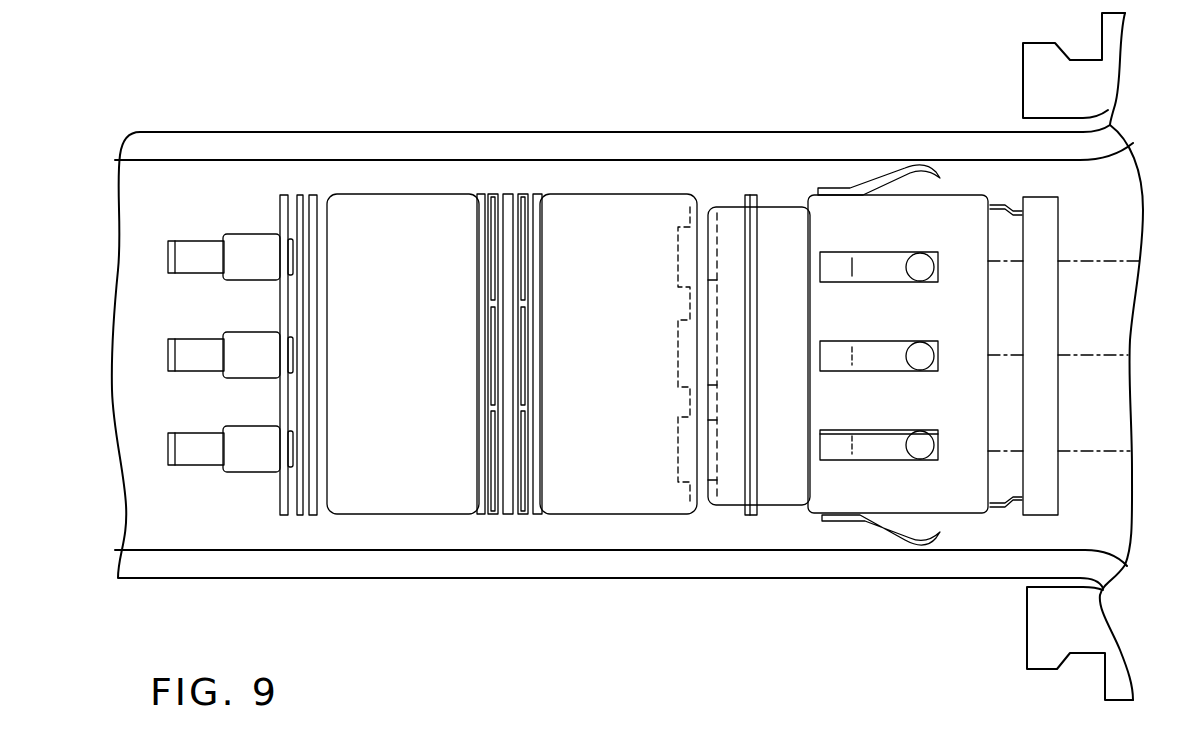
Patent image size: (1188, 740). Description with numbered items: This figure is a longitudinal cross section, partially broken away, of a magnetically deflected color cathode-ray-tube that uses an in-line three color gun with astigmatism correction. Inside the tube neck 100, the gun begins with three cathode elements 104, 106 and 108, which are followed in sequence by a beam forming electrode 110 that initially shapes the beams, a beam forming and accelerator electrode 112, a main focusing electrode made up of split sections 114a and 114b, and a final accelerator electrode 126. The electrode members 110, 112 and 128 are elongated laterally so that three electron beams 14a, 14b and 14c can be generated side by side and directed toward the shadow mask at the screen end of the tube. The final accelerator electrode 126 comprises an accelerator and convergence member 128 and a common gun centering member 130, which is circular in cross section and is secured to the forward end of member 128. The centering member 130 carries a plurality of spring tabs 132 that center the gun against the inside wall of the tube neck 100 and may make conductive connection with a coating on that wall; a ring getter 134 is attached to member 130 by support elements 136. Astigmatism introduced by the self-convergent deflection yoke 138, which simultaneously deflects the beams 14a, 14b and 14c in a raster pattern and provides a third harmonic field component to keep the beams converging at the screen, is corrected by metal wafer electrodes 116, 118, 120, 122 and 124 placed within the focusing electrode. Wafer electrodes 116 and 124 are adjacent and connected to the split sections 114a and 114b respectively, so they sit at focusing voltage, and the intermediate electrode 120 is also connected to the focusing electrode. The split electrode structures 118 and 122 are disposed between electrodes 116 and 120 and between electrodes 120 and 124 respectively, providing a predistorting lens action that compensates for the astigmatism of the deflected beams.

The tube neck 100 is at (604, 135).
The cathode element 104 is at (259, 426).
The cathode element 106 is at (260, 332).
The cathode element 108 is at (262, 234).
The beam forming electrode (G1) 110 is at (299, 195).
The beam forming and accelerator electrode (G2) 112 is at (313, 195).
The split section of the G3 focusing electrode 114a is at (408, 514).
The split section of the G3 focusing electrode 114b is at (693, 514).
The metal wafer electrode 116 is at (481, 194).
The split electrode structure 118 is at (492, 194).
The intermediate electrode 120 is at (509, 514).
The split electrode structure 122 is at (525, 514).
The metal wafer electrode 124 is at (537, 514).
The final accelerator electrode (G4) 126 is at (789, 188).
The accelerator and convergence member 128 is at (727, 505).
The gun centering member 130 is at (953, 513).
The spring tabs 132 is at (880, 515).
The ring getter 134 is at (1060, 483).
The support elements 136 is at (1000, 206).
The deflection yoke 138 is at (1027, 628).
The electron beam 14a is at (1117, 451).
The electron beam 14b is at (1117, 355).
The electron beam 14c is at (1118, 261).